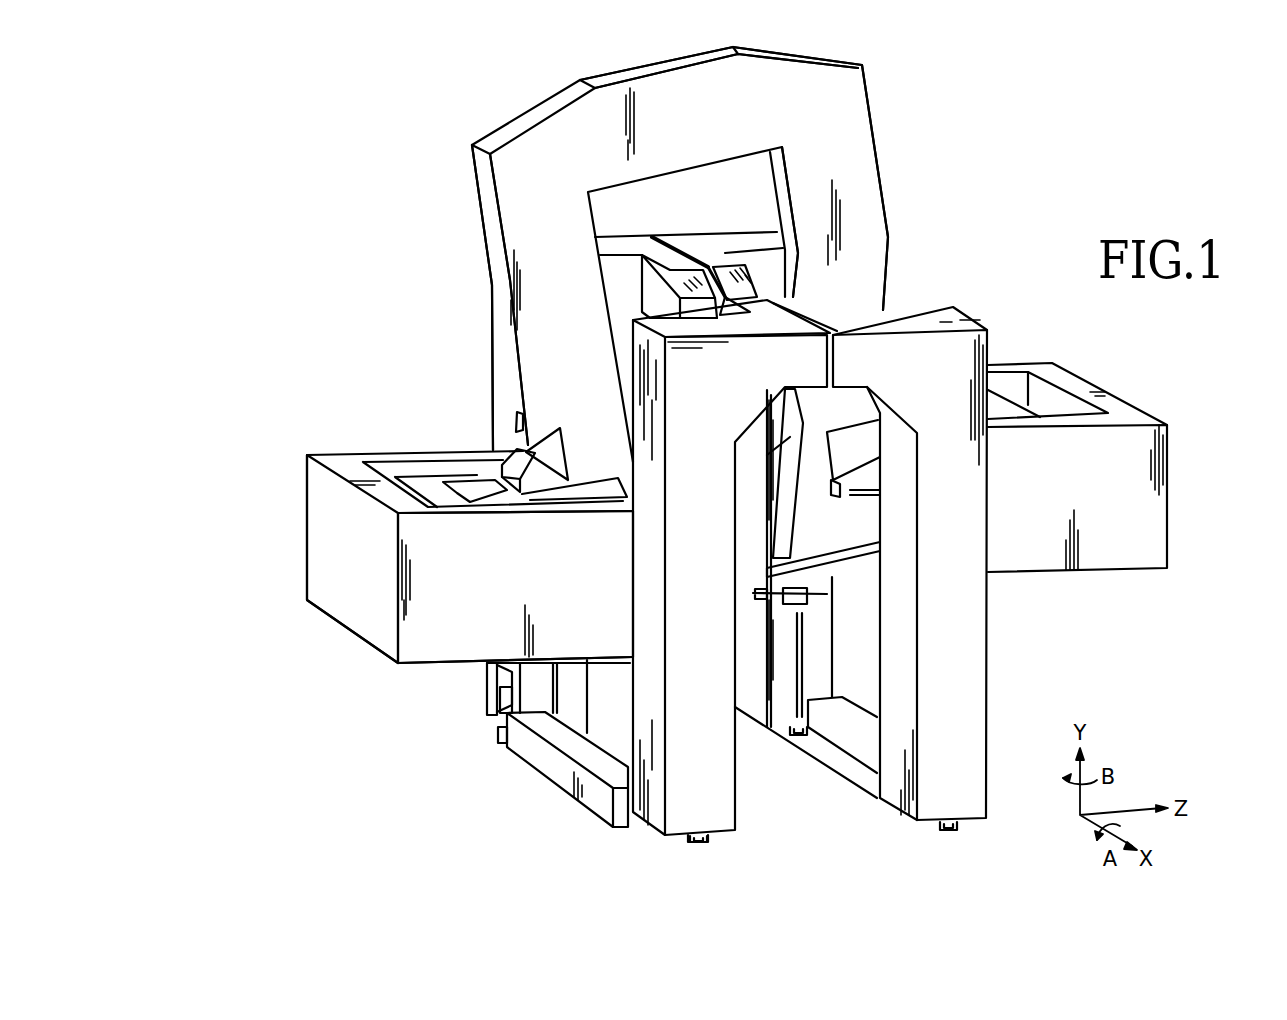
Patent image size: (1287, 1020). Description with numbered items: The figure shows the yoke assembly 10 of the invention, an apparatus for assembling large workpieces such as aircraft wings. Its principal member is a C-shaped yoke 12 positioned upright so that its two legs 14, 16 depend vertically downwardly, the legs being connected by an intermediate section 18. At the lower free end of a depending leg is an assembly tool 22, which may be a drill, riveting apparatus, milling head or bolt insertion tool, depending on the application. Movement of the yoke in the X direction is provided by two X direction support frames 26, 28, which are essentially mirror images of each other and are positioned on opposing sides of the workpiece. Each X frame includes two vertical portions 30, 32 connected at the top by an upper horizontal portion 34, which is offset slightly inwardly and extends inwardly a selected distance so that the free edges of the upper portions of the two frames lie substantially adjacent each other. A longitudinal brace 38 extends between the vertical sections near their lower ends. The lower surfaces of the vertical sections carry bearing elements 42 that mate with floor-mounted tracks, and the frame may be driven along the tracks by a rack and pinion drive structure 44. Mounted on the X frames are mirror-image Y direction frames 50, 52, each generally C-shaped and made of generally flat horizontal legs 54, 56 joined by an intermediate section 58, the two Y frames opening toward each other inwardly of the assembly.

The yoke assembly 10 is at (1032, 135).
The C-shaped yoke 12 is at (452, 194).
The leg of yoke 14 is at (528, 297).
The leg of yoke 16 is at (875, 247).
The intermediate section 18 is at (701, 72).
The assembly tool 22 is at (848, 575).
The X direction support frame 26 is at (802, 795).
The X direction support frame 28 is at (996, 688).
The vertical portion 30 is at (490, 718).
The vertical portion 32 is at (723, 725).
The upper horizontal portion 34 is at (662, 278).
The longitudinal brace 38 is at (558, 770).
The bearing element 42 is at (707, 838).
The rack and pinion drive structure 44 is at (495, 680).
The Y direction frame 50 is at (297, 497).
The Y direction frame 52 is at (1182, 522).
The horizontal leg 54 is at (393, 453).
The horizontal leg 56 is at (459, 585).
The intermediate section 58 is at (362, 620).